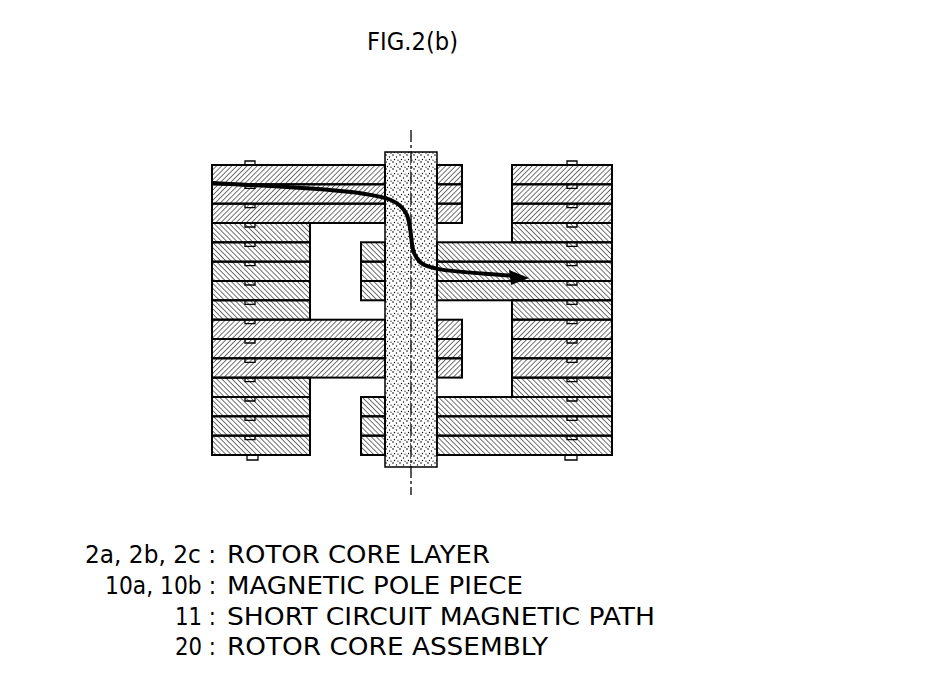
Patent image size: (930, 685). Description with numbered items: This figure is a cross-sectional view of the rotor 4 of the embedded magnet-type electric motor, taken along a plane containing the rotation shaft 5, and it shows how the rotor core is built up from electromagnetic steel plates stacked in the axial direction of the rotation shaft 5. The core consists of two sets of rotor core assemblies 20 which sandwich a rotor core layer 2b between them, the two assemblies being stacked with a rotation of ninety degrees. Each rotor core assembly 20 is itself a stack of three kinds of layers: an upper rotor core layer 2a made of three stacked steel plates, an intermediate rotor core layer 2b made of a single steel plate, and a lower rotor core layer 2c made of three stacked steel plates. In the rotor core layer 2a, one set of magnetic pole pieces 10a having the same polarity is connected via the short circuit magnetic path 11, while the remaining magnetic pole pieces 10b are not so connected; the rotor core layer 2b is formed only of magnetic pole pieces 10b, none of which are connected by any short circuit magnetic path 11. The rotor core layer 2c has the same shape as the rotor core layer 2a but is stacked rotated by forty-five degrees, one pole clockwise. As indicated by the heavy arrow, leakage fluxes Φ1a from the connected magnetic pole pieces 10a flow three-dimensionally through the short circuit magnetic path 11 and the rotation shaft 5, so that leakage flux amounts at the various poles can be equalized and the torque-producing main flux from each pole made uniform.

The rotor 4 is at (120, 110).
The rotation shaft 5 is at (423, 152).
The leakage flux 1a is at (398, 178).
The rotor core layer 2a is at (615, 165).
The rotor core layer 2b is at (615, 237).
The rotor core layer 2c is at (615, 243).
The magnetic pole piece 10a is at (223, 163).
The magnetic pole piece 10b is at (583, 163).
The short circuit magnetic path 11 is at (337, 163).
The rotor core assembly 20 is at (705, 163).